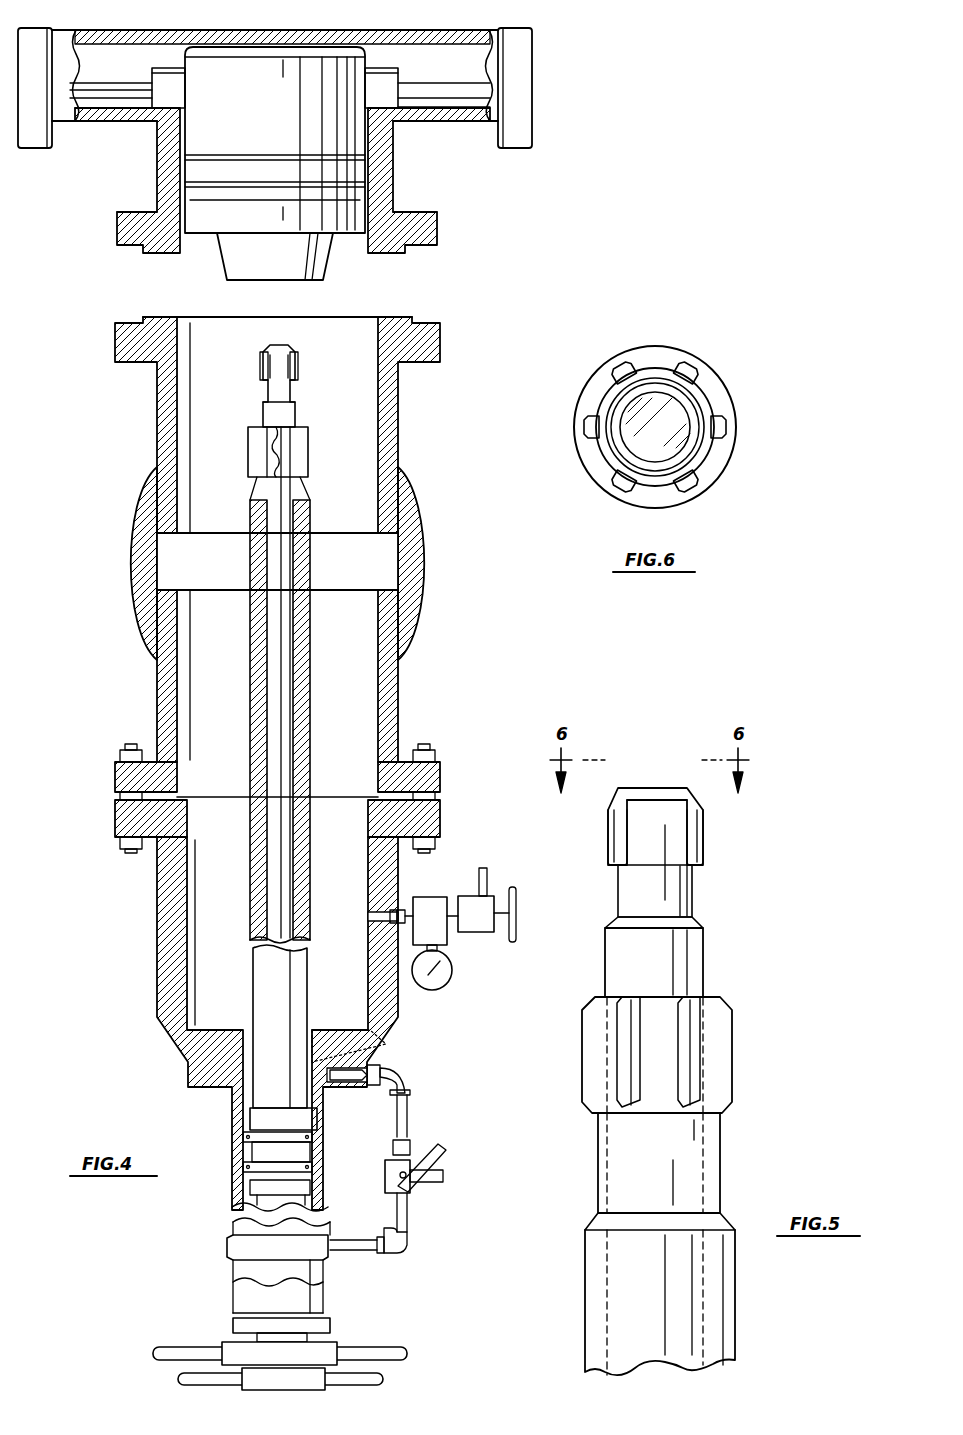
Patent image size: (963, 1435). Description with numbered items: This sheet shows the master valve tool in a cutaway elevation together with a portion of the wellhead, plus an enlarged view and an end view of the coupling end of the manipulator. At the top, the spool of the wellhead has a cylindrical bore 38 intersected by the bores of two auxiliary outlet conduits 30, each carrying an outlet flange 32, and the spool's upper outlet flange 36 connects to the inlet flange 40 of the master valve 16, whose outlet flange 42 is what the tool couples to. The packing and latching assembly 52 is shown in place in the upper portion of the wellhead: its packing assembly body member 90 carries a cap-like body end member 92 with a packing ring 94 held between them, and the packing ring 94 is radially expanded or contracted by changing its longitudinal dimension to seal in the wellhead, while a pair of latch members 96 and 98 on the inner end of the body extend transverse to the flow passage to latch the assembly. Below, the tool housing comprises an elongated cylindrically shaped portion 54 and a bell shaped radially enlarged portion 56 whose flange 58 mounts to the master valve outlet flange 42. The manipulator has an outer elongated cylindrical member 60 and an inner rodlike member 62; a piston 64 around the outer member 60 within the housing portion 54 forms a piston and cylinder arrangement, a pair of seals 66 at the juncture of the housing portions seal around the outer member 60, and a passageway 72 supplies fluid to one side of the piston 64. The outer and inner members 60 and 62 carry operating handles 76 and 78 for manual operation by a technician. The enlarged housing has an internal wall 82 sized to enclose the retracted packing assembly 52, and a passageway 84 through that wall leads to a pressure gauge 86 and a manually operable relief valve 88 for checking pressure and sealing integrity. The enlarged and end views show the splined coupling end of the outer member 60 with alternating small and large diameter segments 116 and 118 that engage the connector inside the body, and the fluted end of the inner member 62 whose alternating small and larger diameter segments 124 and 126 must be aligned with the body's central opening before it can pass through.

In FIG. 4, the master valve 16 is at (134, 554).
In FIG. 4, the conduit 30 is at (58, 110).
In FIG. 4, the outlet flange 32 is at (528, 90).
In FIG. 4, the outlet flange 36 is at (124, 228).
In FIG. 4, the cylindrical bore 38 is at (190, 130).
In FIG. 4, the inlet flange 40 is at (118, 348).
In FIG. 4, the outlet flange 42 is at (118, 774).
In FIG. 4, the packing and latching assembly 52 is at (355, 256).
In FIG. 4, the elongated cylindrically shaped portion 54 is at (232, 1262).
In FIG. 4, the radially enlarged portion 56 is at (166, 870).
In FIG. 4, the flange 58 is at (118, 824).
In FIG. 4, the outer elongated cylindrical member 60 is at (264, 974).
In FIG. 6, the outer elongated cylindrical member 60 is at (586, 378).
In FIG. 5, the outer elongated cylindrical member 60 is at (685, 1156).
In FIG. 4, the inner rodlike member 62 is at (273, 888).
In FIG. 6, the inner rodlike member 62 is at (628, 436).
In FIG. 5, the inner rodlike member 62 is at (683, 895).
In FIG. 4, the piston 64 is at (250, 1150).
In FIG. 4, the seals 66 is at (360, 1034).
In FIG. 4, the passageway 72 is at (347, 1078).
In FIG. 4, the operating handle 76 is at (370, 1352).
In FIG. 4, the operating handle 78 is at (384, 1378).
In FIG. 4, the internal wall 82 is at (366, 856).
In FIG. 4, the passageway 84 is at (380, 914).
In FIG. 4, the pressure gauge 86 is at (441, 972).
In FIG. 4, the manually operable relief valve 88 is at (485, 904).
In FIG. 4, the packing assembly body member 90 is at (352, 170).
In FIG. 4, the body end member 92 is at (218, 210).
In FIG. 4, the packing ring 94 is at (362, 160).
In FIG. 4, the latch member 96 is at (162, 84).
In FIG. 4, the latch member 98 is at (386, 95).
In FIG. 4, the small diameter segments 116 is at (252, 426).
In FIG. 6, the small diameter segments 116 is at (707, 393).
In FIG. 5, the small diameter segments 116 is at (710, 1002).
In FIG. 4, the large diameter segments 118 is at (308, 462).
In FIG. 6, the large diameter segments 118 is at (728, 426).
In FIG. 5, the large diameter segments 118 is at (725, 1050).
In FIG. 4, the small diameter segments 124 is at (268, 344).
In FIG. 6, the small diameter segments 124 is at (650, 382).
In FIG. 5, the small diameter segments 124 is at (651, 810).
In FIG. 4, the larger diameter segments 126 is at (296, 368).
In FIG. 6, the larger diameter segments 126 is at (700, 440).
In FIG. 5, the larger diameter segments 126 is at (606, 846).